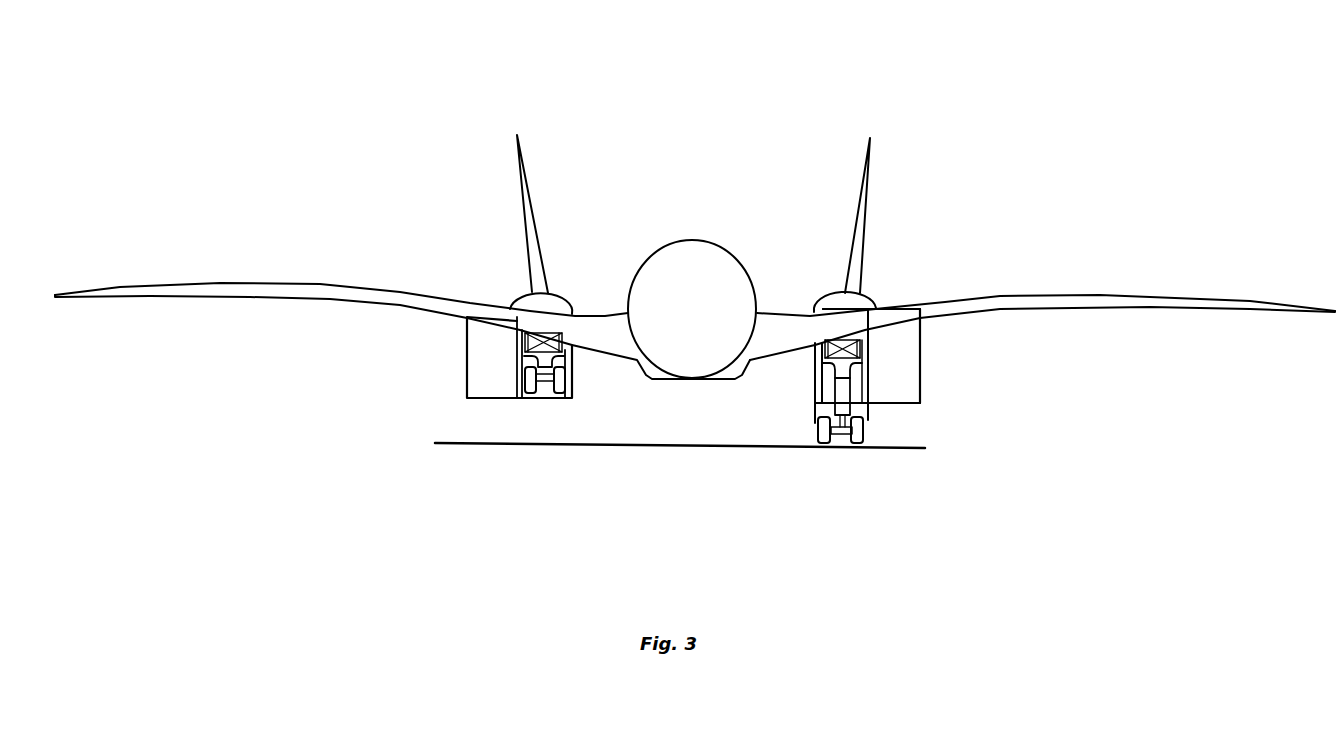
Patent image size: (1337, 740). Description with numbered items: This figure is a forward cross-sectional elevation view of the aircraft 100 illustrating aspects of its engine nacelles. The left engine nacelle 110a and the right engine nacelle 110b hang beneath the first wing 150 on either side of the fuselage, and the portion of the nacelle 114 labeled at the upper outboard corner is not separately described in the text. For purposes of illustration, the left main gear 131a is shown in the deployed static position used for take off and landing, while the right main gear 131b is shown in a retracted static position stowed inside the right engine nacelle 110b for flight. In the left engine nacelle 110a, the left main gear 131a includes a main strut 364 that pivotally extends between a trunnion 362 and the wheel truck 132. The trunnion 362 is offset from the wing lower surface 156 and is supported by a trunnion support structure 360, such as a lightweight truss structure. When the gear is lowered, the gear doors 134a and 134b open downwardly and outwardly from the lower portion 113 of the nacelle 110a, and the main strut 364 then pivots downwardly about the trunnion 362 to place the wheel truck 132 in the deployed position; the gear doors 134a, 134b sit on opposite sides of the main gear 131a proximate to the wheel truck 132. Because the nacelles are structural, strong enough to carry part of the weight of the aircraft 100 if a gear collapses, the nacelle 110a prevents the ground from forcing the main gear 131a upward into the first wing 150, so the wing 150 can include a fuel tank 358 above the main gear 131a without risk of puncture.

The aircraft 100 is at (676, 134).
The left engine nacelle 110a is at (921, 372).
The right engine nacelle 110b is at (466, 375).
The lower portion 113 is at (916, 408).
The nacelle upper surface 114 is at (919, 308).
The left main gear 131a is at (843, 445).
The right main gear 131b is at (548, 385).
The wheel truck 132 is at (867, 443).
The gear door 134a is at (870, 422).
The gear door 134b is at (818, 425).
The first wing 150 is at (1225, 298).
The wing lower surface 156 is at (1145, 310).
The fuel tank 358 is at (903, 333).
The trunnion support structure 360 is at (856, 325).
The trunnion 362 is at (817, 362).
The main strut 364 is at (866, 390).